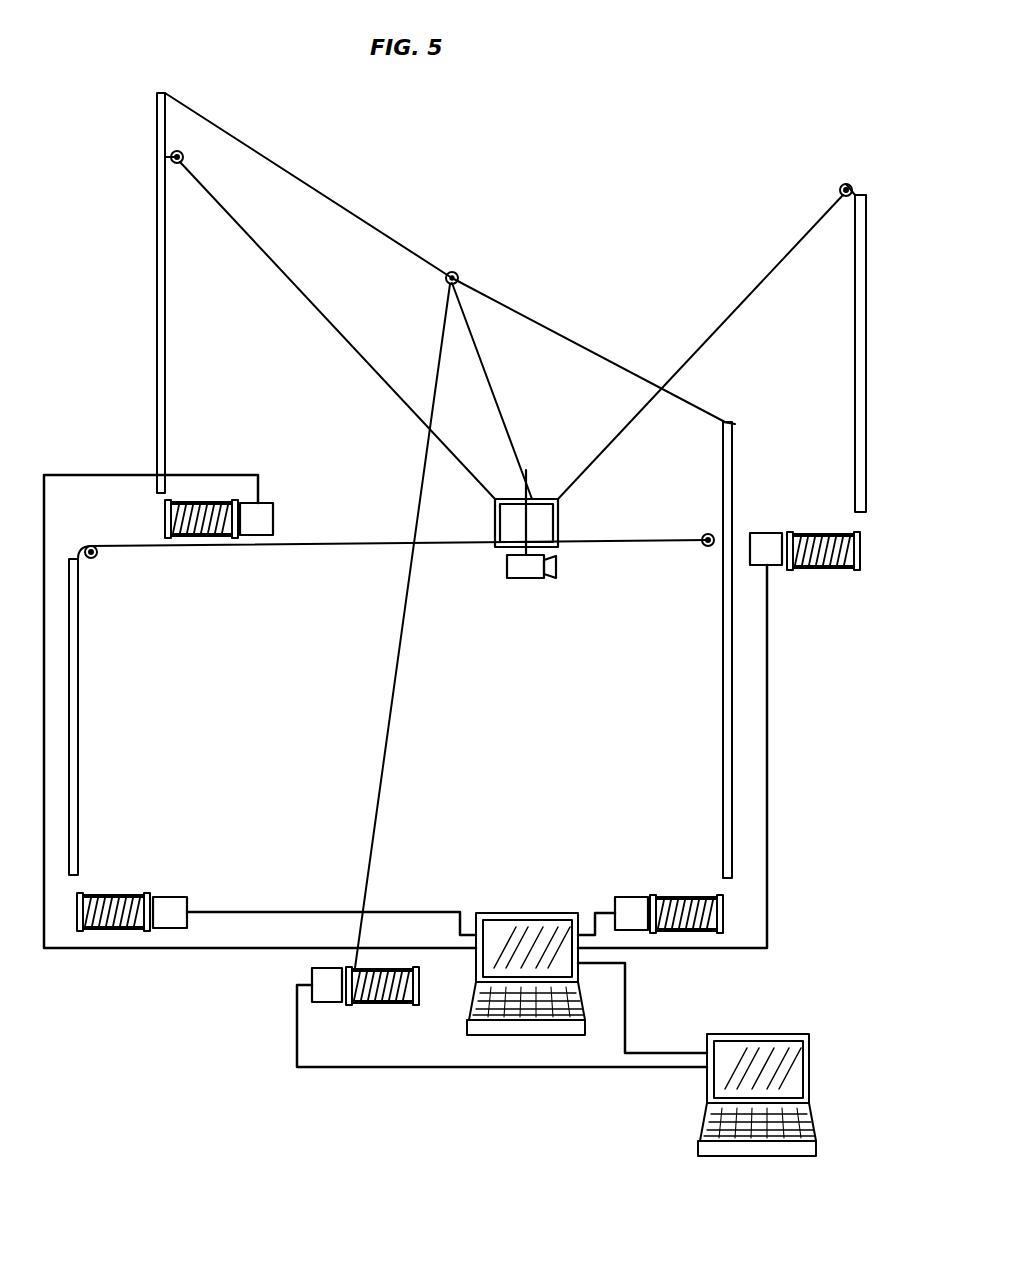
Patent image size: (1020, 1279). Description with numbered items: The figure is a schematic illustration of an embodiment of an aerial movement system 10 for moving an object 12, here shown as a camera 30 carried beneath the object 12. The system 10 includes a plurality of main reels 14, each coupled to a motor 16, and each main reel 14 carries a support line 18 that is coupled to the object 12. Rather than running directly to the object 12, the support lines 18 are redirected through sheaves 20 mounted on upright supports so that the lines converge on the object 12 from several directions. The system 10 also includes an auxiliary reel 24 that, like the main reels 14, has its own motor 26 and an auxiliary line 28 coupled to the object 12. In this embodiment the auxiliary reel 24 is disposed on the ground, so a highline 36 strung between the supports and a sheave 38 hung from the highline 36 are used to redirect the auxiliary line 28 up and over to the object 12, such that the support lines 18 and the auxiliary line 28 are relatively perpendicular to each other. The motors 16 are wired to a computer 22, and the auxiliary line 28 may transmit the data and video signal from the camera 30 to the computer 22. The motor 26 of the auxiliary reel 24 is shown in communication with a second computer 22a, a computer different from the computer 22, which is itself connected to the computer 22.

The aerial movement system 10 is at (756, 160).
The object 12 is at (560, 524).
The main reel 14 is at (205, 500).
The motor 16 is at (263, 512).
The support line 18 is at (278, 262).
The sheave 20 is at (183, 165).
The computer 22 is at (470, 1000).
The second computer 22a is at (700, 1130).
The auxiliary reel 24 is at (382, 995).
The motor 26 is at (312, 980).
The auxiliary line 28 is at (495, 385).
The camera 30 is at (527, 582).
The highline 36 is at (396, 215).
The sheave 38 is at (460, 272).